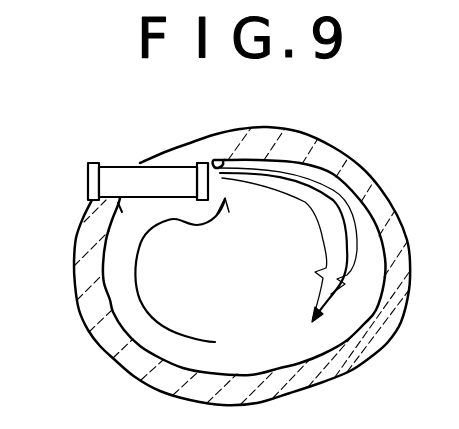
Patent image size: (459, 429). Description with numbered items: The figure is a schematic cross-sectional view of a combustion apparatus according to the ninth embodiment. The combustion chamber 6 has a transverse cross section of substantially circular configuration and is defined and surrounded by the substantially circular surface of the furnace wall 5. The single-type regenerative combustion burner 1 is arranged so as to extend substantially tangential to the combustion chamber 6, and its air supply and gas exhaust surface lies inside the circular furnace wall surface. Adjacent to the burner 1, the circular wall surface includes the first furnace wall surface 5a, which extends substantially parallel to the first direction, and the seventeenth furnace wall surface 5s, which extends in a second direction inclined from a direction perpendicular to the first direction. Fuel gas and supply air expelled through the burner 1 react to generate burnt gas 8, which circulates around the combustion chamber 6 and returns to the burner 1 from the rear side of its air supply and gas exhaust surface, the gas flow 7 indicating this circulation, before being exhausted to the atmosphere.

The regenerative combustion burner 1 is at (122, 177).
The furnace wall 5 is at (328, 162).
The first furnace wall surface 5a is at (219, 163).
The seventeenth furnace wall surface 5s is at (125, 218).
The combustion chamber 6 is at (268, 312).
The gas flow 7 is at (237, 173).
The burnt gas 8 is at (225, 200).